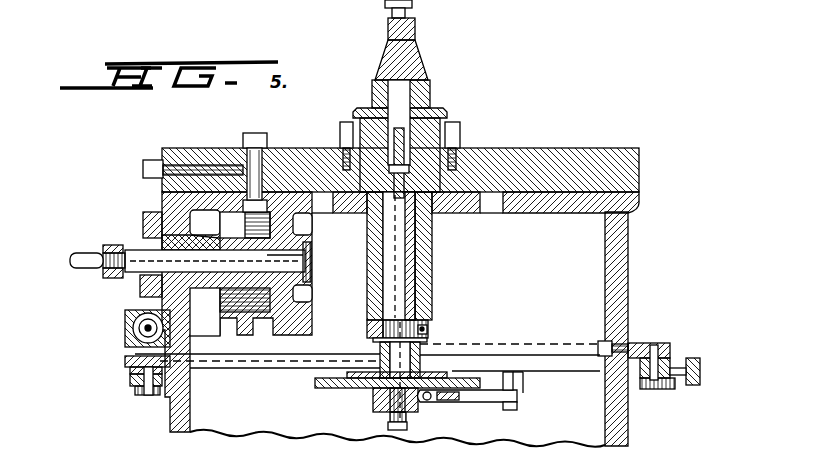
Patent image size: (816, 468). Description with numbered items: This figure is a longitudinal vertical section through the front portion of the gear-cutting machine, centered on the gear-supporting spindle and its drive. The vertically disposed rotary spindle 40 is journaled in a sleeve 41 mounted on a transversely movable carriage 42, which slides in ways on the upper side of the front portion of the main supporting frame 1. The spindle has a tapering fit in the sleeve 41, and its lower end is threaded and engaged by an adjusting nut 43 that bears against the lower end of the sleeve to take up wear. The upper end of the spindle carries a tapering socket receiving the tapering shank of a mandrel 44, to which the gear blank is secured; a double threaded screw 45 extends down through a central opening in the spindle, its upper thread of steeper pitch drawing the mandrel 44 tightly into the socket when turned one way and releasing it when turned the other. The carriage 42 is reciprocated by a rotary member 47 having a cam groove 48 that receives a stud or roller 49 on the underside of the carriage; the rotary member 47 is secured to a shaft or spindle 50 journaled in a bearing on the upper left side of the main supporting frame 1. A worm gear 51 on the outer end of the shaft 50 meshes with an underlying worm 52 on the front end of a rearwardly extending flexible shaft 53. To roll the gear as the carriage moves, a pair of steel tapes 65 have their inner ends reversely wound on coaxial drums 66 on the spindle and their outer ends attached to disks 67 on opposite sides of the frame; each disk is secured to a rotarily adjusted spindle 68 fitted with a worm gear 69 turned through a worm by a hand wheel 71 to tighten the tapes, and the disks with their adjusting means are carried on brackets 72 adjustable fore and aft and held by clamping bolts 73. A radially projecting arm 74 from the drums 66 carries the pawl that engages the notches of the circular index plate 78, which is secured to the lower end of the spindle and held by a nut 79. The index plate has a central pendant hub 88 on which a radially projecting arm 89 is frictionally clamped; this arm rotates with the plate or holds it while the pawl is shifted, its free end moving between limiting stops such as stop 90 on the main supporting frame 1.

The main supporting frame 1 is at (615, 290).
The rotary spindle 40 is at (410, 278).
The sleeve 41 is at (367, 272).
The carriage 42 is at (575, 150).
The adjusting nut 43 is at (639, 204).
The mandrel 44 is at (418, 62).
The double threaded screw 45 is at (405, 235).
The rotary member 47 is at (305, 325).
The cam groove 48 is at (248, 325).
The stud or roller 49 is at (263, 200).
The shaft or spindle 50 is at (303, 264).
The worm gear 51 is at (143, 214).
The worm 52 is at (132, 328).
The flexible shaft 53 is at (128, 358).
The steel tapes 65 is at (262, 370).
The coaxial drums 66 is at (428, 340).
The disks 67 is at (130, 370).
The rotarily adjusted spindles 68 is at (133, 382).
The worm gears 69 is at (145, 395).
The hand wheels 71 is at (700, 378).
The brackets 72 is at (153, 380).
The clamping bolts 73 is at (603, 345).
The radially projecting arm 74 is at (425, 372).
The index plate 78 is at (338, 388).
The nut 79 is at (392, 418).
The pendant hub 88 is at (380, 400).
The radially projecting arm 89 is at (470, 402).
The limiting stop 90 is at (523, 388).